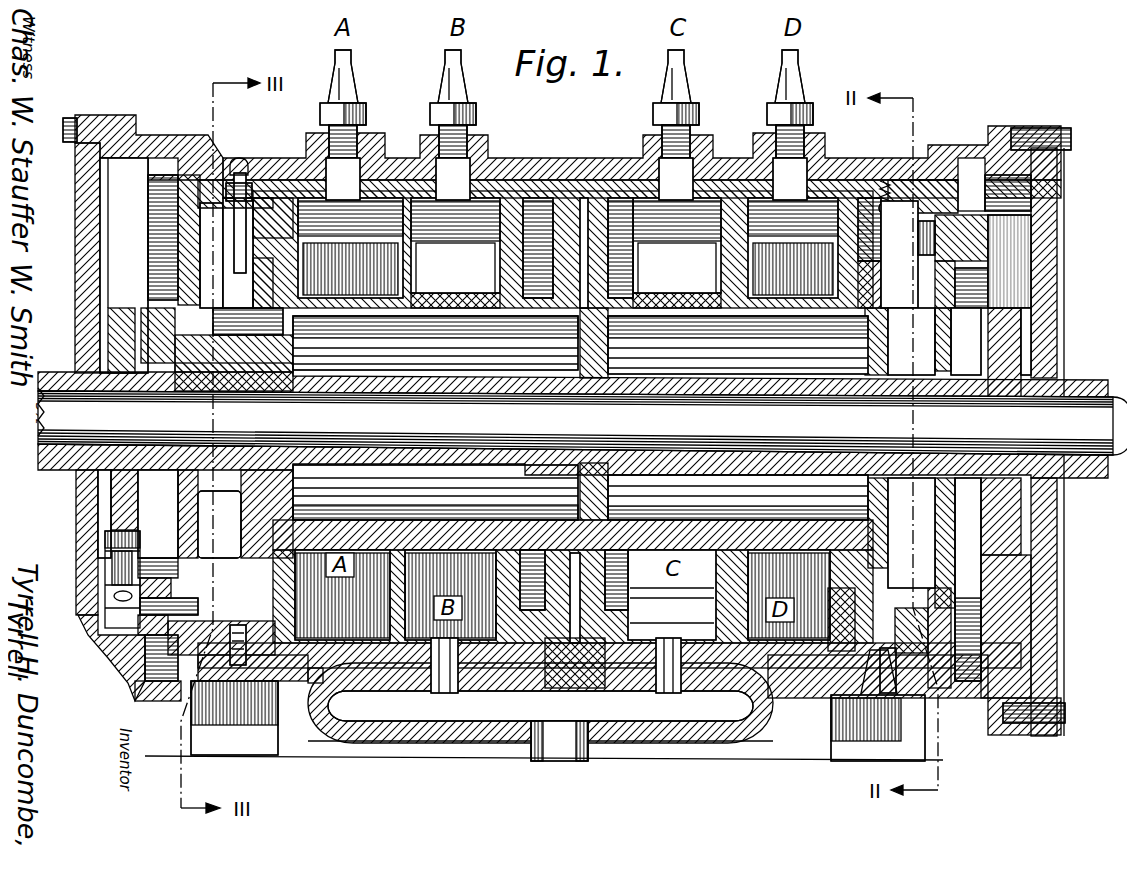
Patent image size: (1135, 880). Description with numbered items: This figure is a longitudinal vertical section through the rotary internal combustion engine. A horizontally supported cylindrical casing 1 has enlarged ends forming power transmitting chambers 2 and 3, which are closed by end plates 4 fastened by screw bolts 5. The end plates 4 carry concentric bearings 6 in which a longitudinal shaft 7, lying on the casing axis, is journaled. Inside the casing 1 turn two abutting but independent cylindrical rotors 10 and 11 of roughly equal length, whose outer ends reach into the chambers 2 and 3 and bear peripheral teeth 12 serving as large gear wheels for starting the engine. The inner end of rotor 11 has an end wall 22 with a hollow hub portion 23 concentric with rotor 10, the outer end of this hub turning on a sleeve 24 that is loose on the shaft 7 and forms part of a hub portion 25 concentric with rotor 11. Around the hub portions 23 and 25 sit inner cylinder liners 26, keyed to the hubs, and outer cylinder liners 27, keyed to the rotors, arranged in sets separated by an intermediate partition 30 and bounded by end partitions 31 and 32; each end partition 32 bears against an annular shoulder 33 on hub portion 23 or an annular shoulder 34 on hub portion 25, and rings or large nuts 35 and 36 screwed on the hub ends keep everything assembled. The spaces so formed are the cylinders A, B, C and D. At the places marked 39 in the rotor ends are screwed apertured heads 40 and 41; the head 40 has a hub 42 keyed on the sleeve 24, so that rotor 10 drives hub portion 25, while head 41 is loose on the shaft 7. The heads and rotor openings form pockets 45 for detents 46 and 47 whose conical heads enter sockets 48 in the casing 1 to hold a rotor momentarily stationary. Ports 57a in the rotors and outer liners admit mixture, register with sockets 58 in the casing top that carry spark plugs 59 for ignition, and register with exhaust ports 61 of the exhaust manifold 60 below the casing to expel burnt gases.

The cylindrical casing 1 is at (575, 165).
The power transmitting chamber 2 is at (124, 265).
The power transmitting chamber 3 is at (1040, 322).
The end plate 4 is at (70, 258).
The screw bolt 5 is at (60, 110).
The bearing 6 is at (50, 364).
The shaft 7 is at (46, 396).
The rotor 10 is at (380, 150).
The rotor 11 is at (725, 150).
The peripheral teeth 12 is at (150, 150).
The end wall 22 is at (572, 268).
The hub portion 23 is at (452, 300).
The sleeve 24 is at (425, 370).
The hub portion 25 is at (672, 300).
The inner cylinder liner 26 is at (418, 290).
The outer cylinder liner 27 is at (480, 188).
The intermediate partition 30 is at (382, 232).
The end partition 31 is at (296, 238).
The end partition 32 is at (518, 262).
The annular shoulder 33 is at (512, 335).
The annular shoulder 34 is at (632, 328).
The ring or large nut 35 is at (860, 282).
The ring or large nut 36 is at (245, 278).
The mounting place 39 is at (200, 178).
The apertured head 40 is at (175, 296).
The apertured head 41 is at (938, 338).
The hub 42 is at (218, 332).
The pocket 45 is at (268, 190).
The detent 46 is at (243, 170).
The detent 47 is at (972, 592).
The recess or socket 48 is at (232, 152).
The port 57a is at (630, 660).
The socket 58 is at (872, 172).
The spark plug 59 is at (345, 65).
The exhaust manifold 60 is at (693, 732).
The exhaust port 61 is at (400, 683).